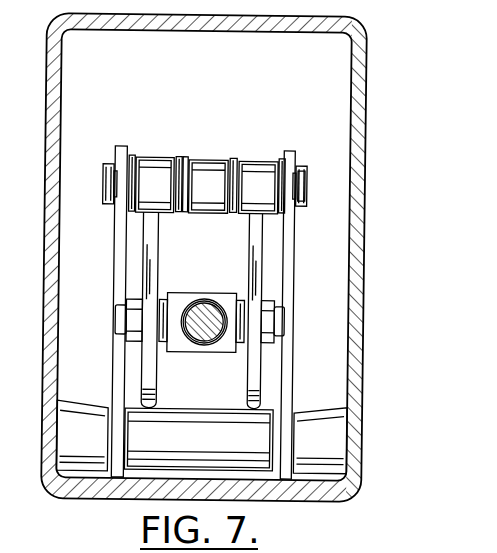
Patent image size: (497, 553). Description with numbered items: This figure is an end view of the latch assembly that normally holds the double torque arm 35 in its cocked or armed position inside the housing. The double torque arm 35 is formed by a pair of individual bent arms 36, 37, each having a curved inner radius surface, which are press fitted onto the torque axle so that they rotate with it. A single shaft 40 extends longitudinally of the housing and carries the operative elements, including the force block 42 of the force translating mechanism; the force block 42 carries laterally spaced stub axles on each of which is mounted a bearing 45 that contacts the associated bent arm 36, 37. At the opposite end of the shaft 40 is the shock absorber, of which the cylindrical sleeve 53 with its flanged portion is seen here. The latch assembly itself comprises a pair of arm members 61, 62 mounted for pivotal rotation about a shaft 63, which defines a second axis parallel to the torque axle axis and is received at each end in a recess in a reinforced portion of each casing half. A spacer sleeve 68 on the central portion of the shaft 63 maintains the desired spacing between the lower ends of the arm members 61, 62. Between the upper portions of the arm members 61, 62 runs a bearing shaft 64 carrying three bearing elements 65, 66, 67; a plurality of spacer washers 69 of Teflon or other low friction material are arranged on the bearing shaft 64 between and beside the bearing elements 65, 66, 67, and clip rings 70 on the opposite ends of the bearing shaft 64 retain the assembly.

The double torque arm 35 is at (247, 400).
The bent arm 36 is at (149, 265).
The bent arm 37 is at (262, 258).
The shaft 40 is at (205, 299).
The force block 42 is at (220, 352).
The bearing 45 is at (121, 317).
The cylindrical sleeve 53 is at (192, 301).
The arm member 61 is at (115, 236).
The arm member 62 is at (294, 277).
The shaft 63 is at (318, 440).
The bearing shaft 64 is at (305, 185).
The bearing element 65 is at (140, 159).
The bearing element 66 is at (212, 215).
The bearing element 67 is at (252, 165).
The spacer sleeve 68 is at (246, 456).
The spacer washer 69 is at (130, 157).
The clip ring 70 is at (105, 165).